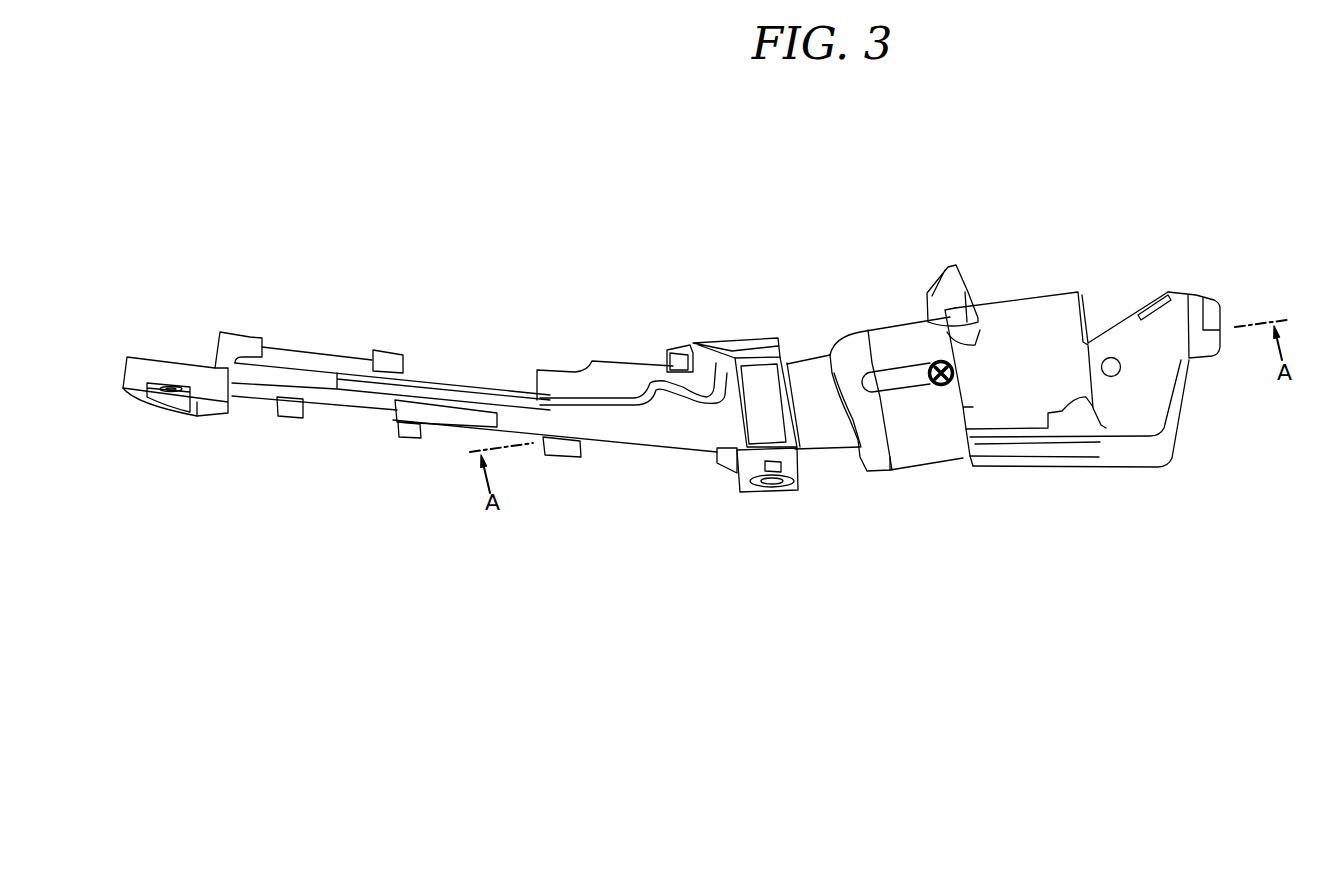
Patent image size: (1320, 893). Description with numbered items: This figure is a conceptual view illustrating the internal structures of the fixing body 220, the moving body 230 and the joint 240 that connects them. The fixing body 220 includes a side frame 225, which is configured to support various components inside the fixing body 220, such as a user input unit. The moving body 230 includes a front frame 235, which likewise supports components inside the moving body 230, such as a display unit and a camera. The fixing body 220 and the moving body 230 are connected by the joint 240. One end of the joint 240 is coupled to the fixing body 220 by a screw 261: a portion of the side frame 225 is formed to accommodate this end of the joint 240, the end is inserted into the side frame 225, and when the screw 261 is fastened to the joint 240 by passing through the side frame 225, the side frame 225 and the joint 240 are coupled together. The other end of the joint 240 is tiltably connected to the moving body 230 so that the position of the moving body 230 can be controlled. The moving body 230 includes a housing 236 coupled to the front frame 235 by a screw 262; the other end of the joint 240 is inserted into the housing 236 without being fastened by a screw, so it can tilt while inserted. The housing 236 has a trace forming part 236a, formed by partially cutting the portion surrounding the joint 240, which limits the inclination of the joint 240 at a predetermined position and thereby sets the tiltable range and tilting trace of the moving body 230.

The fixing body 220 is at (807, 570).
The side frame 225 is at (751, 343).
The moving body 230 is at (1240, 408).
The front frame 235 is at (1017, 312).
The housing 236 is at (893, 335).
The trace forming part 236a is at (836, 433).
The joint 240 is at (809, 372).
The screw 261 is at (765, 490).
The screw 262 is at (943, 388).